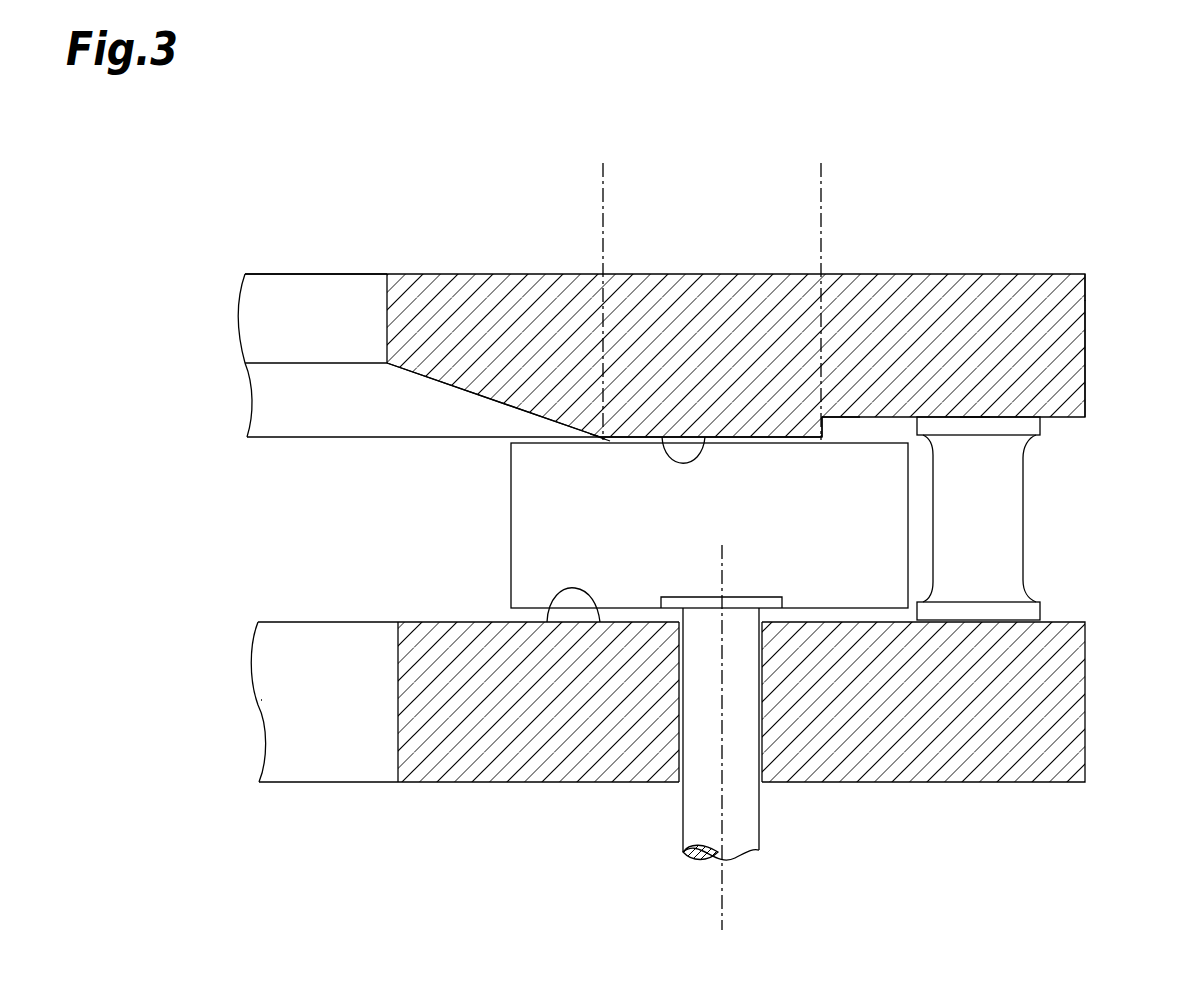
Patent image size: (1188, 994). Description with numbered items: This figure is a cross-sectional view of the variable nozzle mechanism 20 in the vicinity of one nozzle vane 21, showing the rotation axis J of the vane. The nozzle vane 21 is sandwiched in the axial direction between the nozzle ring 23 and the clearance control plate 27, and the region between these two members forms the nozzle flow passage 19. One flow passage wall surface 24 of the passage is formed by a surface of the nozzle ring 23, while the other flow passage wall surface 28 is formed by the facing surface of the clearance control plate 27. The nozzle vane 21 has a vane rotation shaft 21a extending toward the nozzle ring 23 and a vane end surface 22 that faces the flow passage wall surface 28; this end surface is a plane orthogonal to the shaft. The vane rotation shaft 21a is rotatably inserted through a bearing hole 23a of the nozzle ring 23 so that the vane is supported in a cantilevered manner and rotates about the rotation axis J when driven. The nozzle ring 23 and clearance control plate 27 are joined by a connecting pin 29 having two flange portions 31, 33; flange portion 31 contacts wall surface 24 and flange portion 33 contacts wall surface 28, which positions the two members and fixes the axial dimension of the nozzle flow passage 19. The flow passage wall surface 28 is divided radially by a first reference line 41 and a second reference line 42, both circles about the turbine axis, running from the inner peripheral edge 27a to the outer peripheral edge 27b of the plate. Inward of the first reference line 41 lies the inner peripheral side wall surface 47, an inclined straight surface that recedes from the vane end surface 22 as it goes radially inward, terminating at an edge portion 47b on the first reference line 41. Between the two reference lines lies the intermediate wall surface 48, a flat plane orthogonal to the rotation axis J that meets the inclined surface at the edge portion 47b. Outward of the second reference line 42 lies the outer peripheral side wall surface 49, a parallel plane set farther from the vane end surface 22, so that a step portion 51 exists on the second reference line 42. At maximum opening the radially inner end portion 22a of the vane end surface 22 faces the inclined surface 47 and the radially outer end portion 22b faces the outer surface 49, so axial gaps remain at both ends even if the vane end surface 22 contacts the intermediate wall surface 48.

The nozzle flow passage 19 is at (364, 572).
The variable nozzle mechanism 20 is at (983, 149).
The nozzle vane 21 is at (885, 503).
The vane rotation shaft 21a is at (705, 812).
The vane end surface 22 is at (770, 437).
The end portion radially inward of the vane end surface 22a is at (511, 445).
The radial outer end portion of the vane end surface 22b is at (920, 440).
The nozzle ring 23 is at (1065, 708).
The bearing hole 23a is at (762, 700).
The flow passage wall surface 24 is at (548, 624).
The clearance control plate 27 is at (1065, 300).
The inner peripheral edge of the CC plate 27a is at (386, 318).
The outer peripheral edge of the CC plate 27b is at (1085, 355).
The flow passage wall surface 28 is at (781, 361).
The connecting pin 29 is at (995, 552).
The flange portion 31 is at (1030, 612).
The flange portion 33 is at (1027, 423).
The first reference line 41 is at (603, 172).
The second reference line 42 is at (821, 172).
The inner peripheral side wall surface 47 is at (478, 395).
The edge portion of the inner peripheral side wall surface 47b is at (600, 443).
The intermediate wall surface 48 is at (703, 437).
The outer peripheral side wall surface 49 is at (973, 420).
The step portion 51 is at (822, 432).
The rotation axis J is at (722, 915).